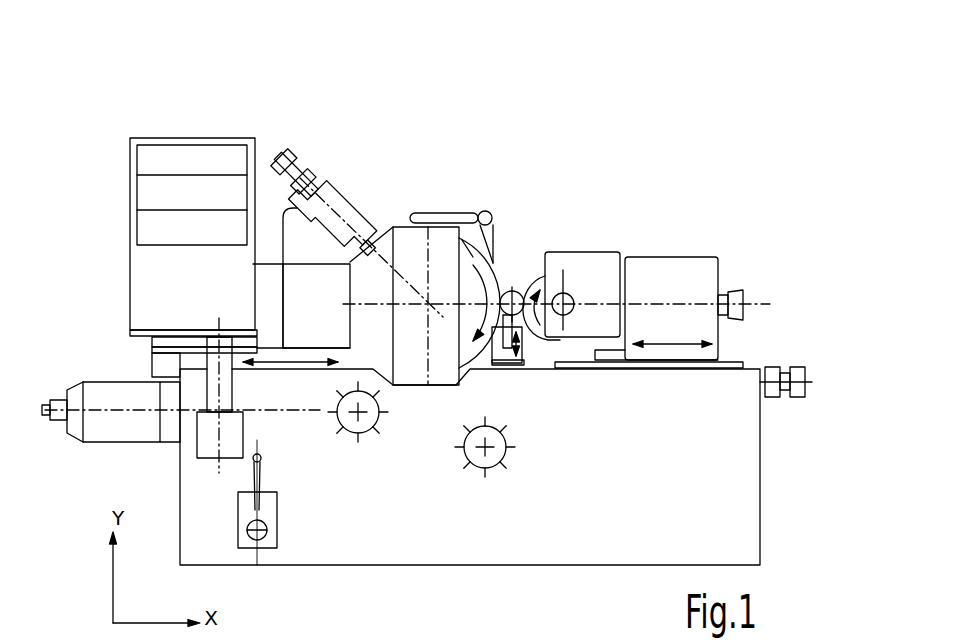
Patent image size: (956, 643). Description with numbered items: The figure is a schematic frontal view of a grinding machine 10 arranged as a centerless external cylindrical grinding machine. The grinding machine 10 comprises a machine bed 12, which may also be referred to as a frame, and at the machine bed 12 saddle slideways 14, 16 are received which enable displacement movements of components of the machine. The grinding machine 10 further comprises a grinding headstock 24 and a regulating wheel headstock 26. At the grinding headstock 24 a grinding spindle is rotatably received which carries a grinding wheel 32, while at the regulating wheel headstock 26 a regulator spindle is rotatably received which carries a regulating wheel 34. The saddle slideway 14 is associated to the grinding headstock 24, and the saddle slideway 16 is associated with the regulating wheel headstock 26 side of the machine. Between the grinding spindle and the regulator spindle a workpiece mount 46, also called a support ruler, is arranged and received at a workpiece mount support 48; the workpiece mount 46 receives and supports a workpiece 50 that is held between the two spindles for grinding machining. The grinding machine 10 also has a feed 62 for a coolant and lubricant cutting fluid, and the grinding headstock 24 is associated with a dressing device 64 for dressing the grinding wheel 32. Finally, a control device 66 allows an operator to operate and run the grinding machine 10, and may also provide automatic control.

The grinding machine 10 is at (570, 160).
The machine bed 12 is at (455, 535).
The saddle slideway 14 is at (280, 346).
The saddle slideway 16 is at (673, 343).
The grinding headstock 24 is at (388, 226).
The regulating wheel headstock 26 is at (688, 252).
The grinding wheel 32 is at (478, 215).
The regulating wheel 34 is at (531, 262).
The workpiece mount 46 is at (553, 368).
The workpiece mount support 48 is at (507, 367).
The workpiece 50 is at (518, 291).
The feed 62 is at (489, 212).
The dressing device 64 is at (337, 172).
The control device 66 is at (157, 190).